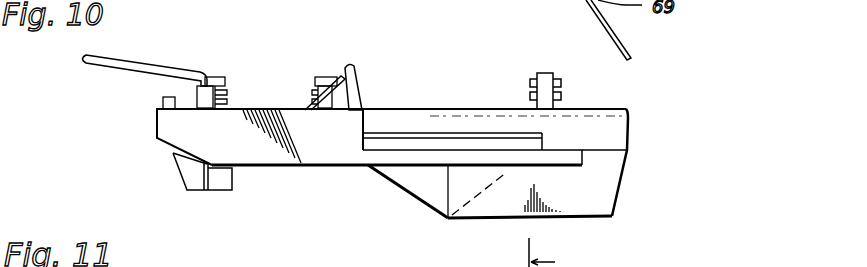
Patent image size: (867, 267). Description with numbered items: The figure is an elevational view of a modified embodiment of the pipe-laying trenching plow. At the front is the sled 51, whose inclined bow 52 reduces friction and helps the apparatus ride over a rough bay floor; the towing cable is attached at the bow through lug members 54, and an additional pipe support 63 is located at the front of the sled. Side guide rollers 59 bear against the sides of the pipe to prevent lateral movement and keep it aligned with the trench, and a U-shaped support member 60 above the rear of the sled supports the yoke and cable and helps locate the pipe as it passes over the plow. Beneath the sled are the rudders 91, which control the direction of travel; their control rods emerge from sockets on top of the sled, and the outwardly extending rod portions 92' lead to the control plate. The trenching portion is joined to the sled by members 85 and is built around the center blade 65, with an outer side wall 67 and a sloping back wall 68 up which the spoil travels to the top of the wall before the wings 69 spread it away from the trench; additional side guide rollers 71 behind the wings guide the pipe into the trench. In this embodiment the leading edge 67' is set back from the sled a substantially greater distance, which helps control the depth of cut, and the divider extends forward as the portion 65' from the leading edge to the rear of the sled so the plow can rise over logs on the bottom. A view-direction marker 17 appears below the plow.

The section line 17 is at (560, 252).
The sled 51 is at (270, 166).
The inclined bow 52 is at (163, 140).
The lug members 54 is at (161, 103).
The side guide rollers 59 is at (323, 76).
The U-shaped support member 60 is at (350, 66).
The additional pipe support 63 is at (178, 98).
The center blade 65 is at (494, 115).
The divider extension portion 65' is at (405, 200).
The outer side wall 67 is at (568, 195).
The leading edge of the plow portion 67' is at (427, 214).
The sloping back wall 68 is at (482, 192).
The wings 69 is at (628, 128).
The additional side guide rollers 71 is at (547, 73).
The connecting members 85 is at (405, 155).
The rudders 91 is at (183, 172).
The outwardly extending control rod portions 92' is at (145, 46).